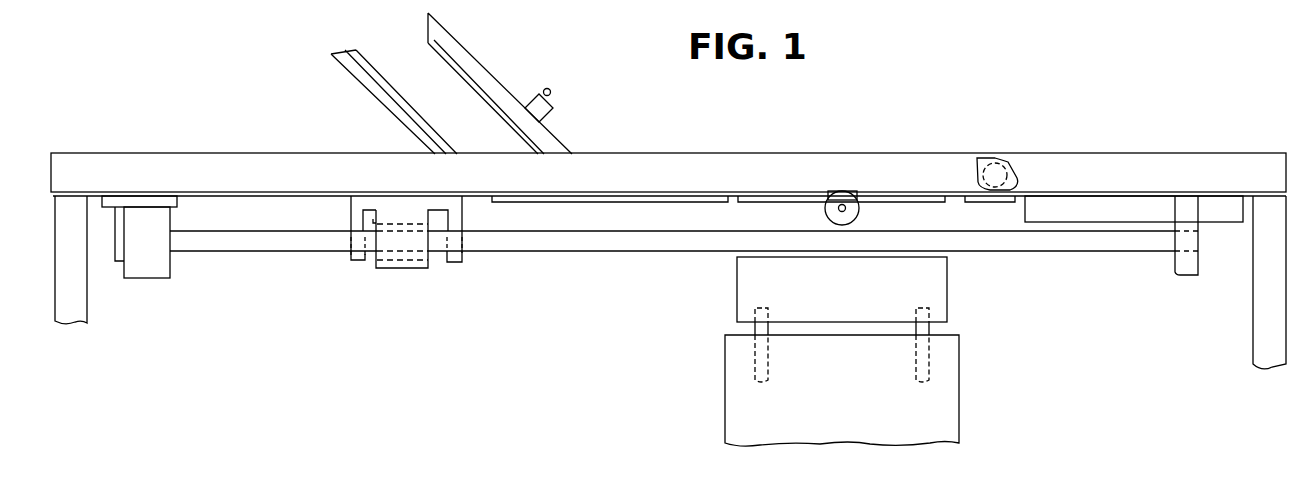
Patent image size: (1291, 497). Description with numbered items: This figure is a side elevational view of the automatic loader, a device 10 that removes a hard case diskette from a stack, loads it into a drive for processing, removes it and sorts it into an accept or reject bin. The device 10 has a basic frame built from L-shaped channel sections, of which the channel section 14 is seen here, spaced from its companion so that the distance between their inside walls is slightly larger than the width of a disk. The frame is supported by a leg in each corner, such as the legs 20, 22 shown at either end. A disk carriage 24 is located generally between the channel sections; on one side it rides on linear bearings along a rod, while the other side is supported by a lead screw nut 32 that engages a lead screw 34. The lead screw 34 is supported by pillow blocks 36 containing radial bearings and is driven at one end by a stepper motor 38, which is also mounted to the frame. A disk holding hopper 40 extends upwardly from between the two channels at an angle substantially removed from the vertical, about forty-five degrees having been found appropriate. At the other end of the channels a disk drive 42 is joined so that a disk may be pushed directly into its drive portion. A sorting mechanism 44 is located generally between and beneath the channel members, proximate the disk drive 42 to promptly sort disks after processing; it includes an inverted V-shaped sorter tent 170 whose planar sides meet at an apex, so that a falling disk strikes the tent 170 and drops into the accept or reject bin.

The device 10 is at (514, 354).
The L-shaped channel section 14 is at (354, 183).
The leg 20 is at (78, 307).
The leg 22 is at (1258, 318).
The disk carriage 24 is at (462, 217).
The lead screw nut 32 is at (377, 262).
The lead screw 34 is at (240, 243).
The pillow block 36 is at (1175, 275).
The stepper motor 38 is at (158, 258).
The disk holding hopper 40 is at (456, 106).
The disk drive 42 is at (1106, 218).
The sorting mechanism 44 is at (737, 322).
The sorter tent 170 is at (752, 283).